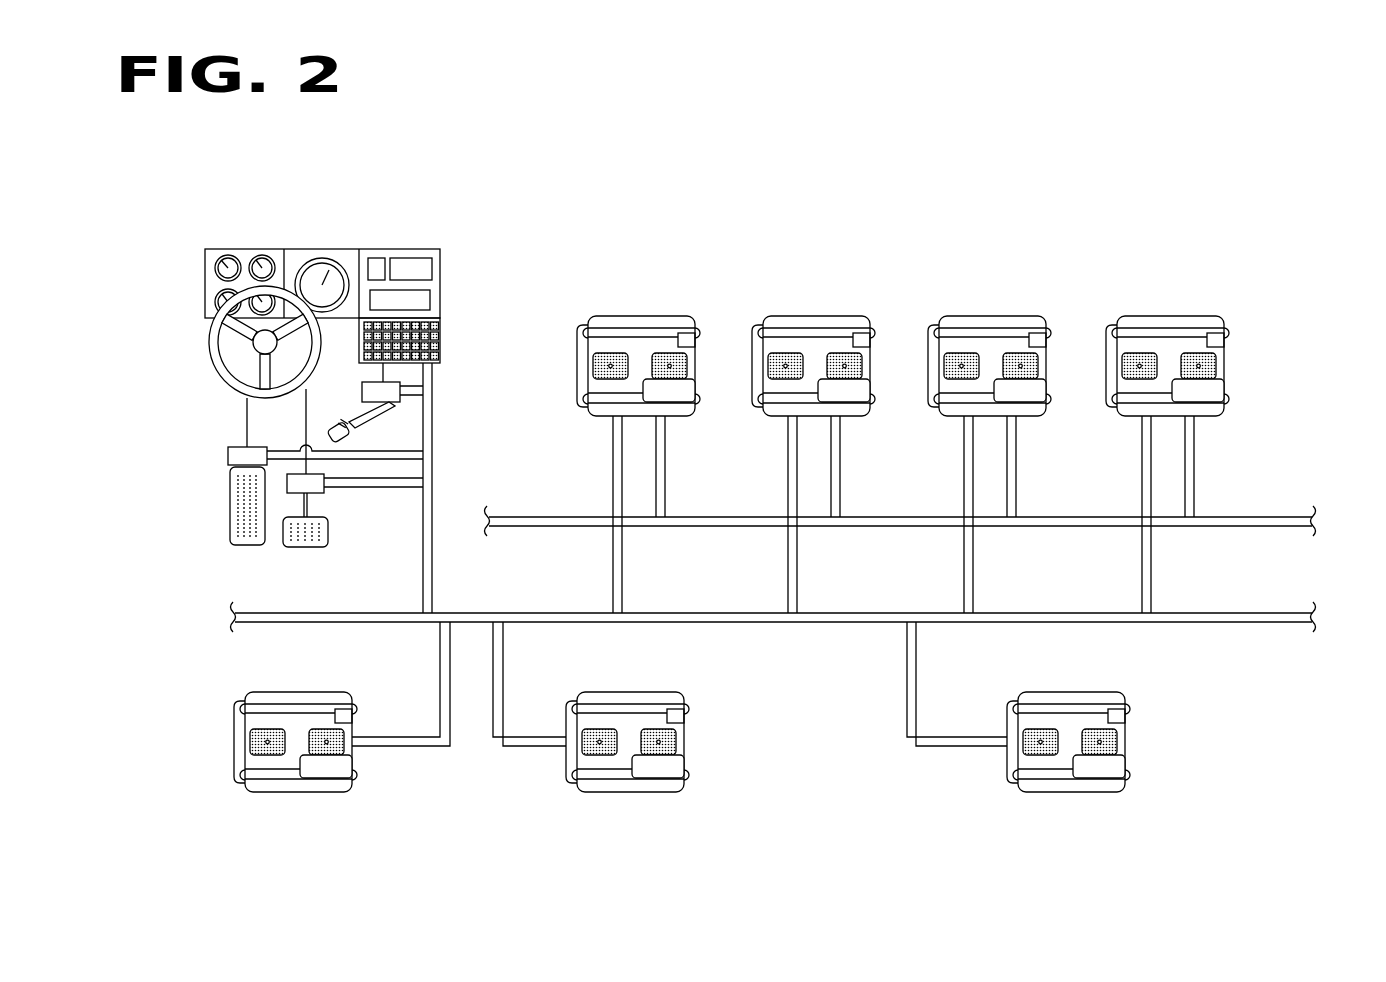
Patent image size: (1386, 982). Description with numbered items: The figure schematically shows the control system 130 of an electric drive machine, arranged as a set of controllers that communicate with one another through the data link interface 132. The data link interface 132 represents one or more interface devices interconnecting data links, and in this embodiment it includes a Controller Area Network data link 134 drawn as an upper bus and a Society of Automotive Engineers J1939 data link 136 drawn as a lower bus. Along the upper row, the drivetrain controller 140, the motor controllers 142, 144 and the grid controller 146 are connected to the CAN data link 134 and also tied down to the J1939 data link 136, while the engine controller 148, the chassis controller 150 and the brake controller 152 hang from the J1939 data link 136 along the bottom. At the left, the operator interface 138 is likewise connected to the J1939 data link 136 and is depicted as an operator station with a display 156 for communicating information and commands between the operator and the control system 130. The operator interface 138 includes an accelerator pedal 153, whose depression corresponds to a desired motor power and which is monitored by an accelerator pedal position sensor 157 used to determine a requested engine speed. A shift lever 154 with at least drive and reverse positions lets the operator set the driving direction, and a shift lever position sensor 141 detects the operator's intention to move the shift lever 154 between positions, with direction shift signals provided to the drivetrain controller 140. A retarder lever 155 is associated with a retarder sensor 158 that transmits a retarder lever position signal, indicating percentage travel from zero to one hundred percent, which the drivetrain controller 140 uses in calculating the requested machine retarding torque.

The control system 130 is at (1288, 258).
The data link interface 132 is at (1316, 483).
The Controller Area Network (CAN) data link 134 is at (1250, 517).
The SAE J1939 data link 136 is at (1277, 622).
The operator interface 138 is at (200, 236).
The drivetrain controller 140 is at (636, 316).
The motor controller 142 is at (828, 316).
The motor controller 144 is at (1005, 316).
The grid controller 146 is at (1160, 316).
The engine controller 148 is at (338, 792).
The chassis controller 150 is at (627, 793).
The brake controller 152 is at (1047, 793).
The shift lever position sensor 141 is at (306, 393).
The accelerator pedal 153 is at (230, 505).
The shift lever 154 is at (355, 428).
The retarder lever 155 is at (328, 532).
The display 156 is at (327, 249).
The accelerator pedal position sensor 157 is at (228, 455).
The retarder sensor 158 is at (322, 493).